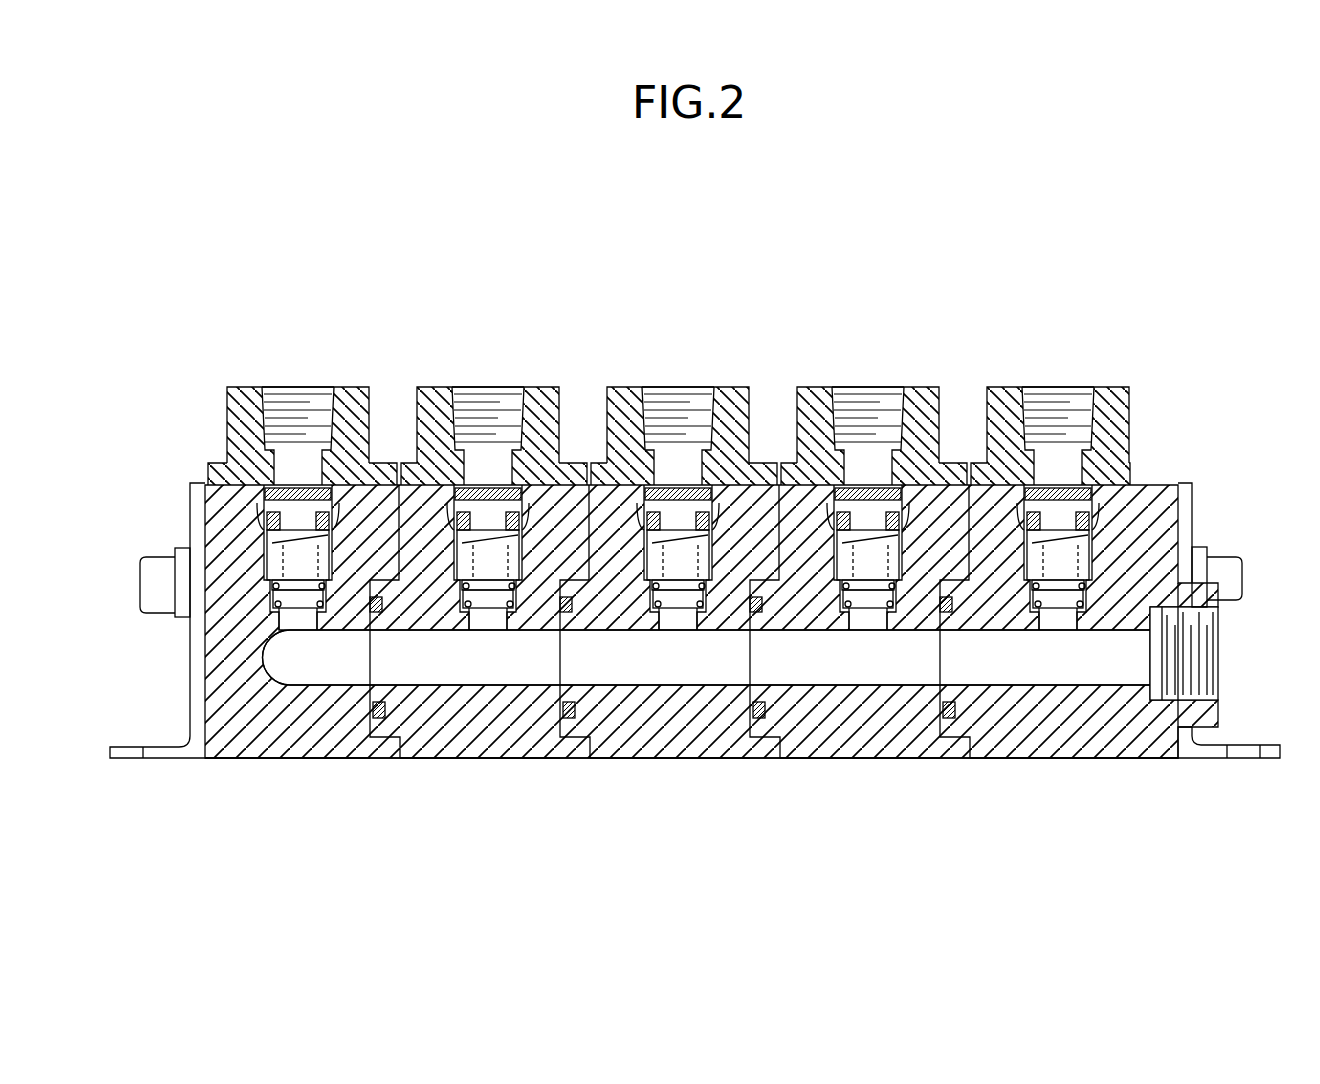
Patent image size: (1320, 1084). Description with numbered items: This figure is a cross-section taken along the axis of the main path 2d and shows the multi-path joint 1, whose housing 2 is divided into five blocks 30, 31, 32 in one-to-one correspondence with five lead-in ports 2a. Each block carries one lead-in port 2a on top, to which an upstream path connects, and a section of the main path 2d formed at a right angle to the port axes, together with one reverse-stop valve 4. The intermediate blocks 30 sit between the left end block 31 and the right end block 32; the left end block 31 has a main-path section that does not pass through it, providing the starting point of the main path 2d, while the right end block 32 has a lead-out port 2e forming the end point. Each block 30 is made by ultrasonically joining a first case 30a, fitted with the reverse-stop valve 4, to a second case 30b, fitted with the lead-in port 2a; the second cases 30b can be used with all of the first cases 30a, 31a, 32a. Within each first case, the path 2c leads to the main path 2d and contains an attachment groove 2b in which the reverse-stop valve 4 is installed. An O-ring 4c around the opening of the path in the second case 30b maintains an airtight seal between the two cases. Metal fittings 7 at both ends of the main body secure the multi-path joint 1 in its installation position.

The multi-path joint 1 is at (742, 248).
The housing 2 is at (1160, 766).
The lead-in port 2a is at (1065, 396).
The attachment groove 2b is at (1130, 478).
The path 2c is at (275, 640).
The main path 2d is at (478, 668).
The lead-out port 2e is at (1220, 657).
The reverse-stop valve 4 is at (1102, 562).
The O-ring 4c is at (378, 759).
The metal fittings 7 is at (1268, 759).
The intermediate block 30 is at (847, 767).
The first case 30a is at (910, 759).
The second case 30b is at (998, 392).
The left end block 31 is at (242, 766).
The first case of left end block 31a is at (300, 759).
The right end block 32 is at (1042, 767).
The first case of right end block 32a is at (1102, 759).